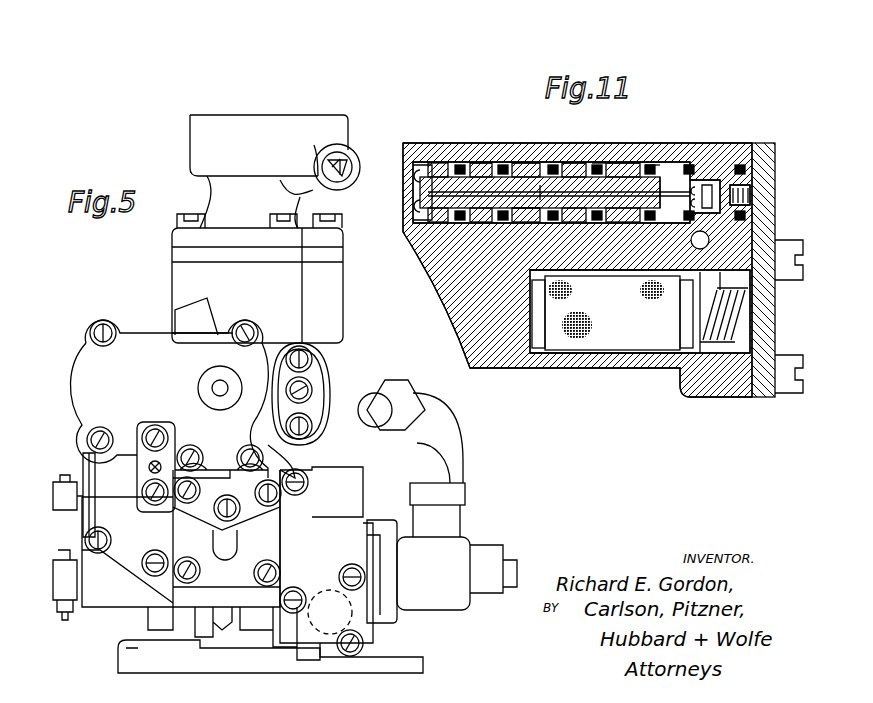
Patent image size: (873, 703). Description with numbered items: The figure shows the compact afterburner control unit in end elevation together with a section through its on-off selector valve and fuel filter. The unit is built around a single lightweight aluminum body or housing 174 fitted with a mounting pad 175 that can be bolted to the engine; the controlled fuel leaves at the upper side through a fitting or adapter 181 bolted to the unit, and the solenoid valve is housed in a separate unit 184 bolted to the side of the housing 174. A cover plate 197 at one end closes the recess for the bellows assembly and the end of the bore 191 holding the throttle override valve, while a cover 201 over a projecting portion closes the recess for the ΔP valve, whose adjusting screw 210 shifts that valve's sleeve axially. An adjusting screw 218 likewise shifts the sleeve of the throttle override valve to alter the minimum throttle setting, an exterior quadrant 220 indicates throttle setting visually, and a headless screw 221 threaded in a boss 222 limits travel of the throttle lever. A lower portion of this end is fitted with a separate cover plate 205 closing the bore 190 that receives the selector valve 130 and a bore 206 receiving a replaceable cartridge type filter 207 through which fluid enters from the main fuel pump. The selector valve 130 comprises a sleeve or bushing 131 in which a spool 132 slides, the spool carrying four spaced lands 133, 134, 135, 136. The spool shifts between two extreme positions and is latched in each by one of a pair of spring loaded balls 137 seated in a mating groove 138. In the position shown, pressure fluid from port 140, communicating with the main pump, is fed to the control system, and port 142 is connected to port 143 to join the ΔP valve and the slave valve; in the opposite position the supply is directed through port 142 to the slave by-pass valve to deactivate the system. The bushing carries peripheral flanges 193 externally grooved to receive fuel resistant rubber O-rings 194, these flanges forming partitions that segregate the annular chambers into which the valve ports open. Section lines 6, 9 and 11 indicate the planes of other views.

In FIG. 5, the fitting or adapter 181 is at (203, 143).
In FIG. 5, the cover plate 197 is at (130, 338).
In FIG. 5, the section line 6- 6 is at (368, 366).
In FIG. 5, the body or housing 174 is at (310, 455).
In FIG. 11, the body or housing 174 is at (718, 387).
In FIG. 5, the adjusting screw 218 is at (150, 466).
In FIG. 5, the exterior quadrant 220 is at (90, 458).
In FIG. 5, the section line 9- 9 is at (130, 493).
In FIG. 5, the cover 201 is at (178, 528).
In FIG. 5, the adjusting screw 210 is at (237, 512).
In FIG. 5, the boss 222 is at (62, 581).
In FIG. 5, the headless screw 221 is at (68, 615).
In FIG. 5, the mounting pad 175 is at (410, 662).
In FIG. 5, the cover plate 205 is at (357, 517).
In FIG. 11, the cover plate 205 is at (768, 193).
In FIG. 5, the section line 11- 11 is at (415, 643).
In FIG. 5, the separate unit 184 is at (450, 595).
In FIG. 11, the land 133 is at (417, 237).
In FIG. 11, the selector valve 130 is at (495, 160).
In FIG. 11, the spring loaded balls 137 is at (420, 173).
In FIG. 11, the groove 138 is at (413, 205).
In FIG. 11, the bore 190 is at (480, 168).
In FIG. 11, the land 134 is at (513, 172).
In FIG. 11, the bore 191 is at (533, 172).
In FIG. 11, the spool 132 is at (555, 190).
In FIG. 11, the port 140 is at (575, 160).
In FIG. 11, the land 135 is at (600, 172).
In FIG. 11, the port 142 is at (618, 170).
In FIG. 11, the port 143 is at (657, 177).
In FIG. 11, the land 136 is at (670, 173).
In FIG. 11, the O-rings 194 is at (687, 153).
In FIG. 11, the sleeve or bushing 131 is at (702, 157).
In FIG. 11, the peripheral flanges 193 is at (706, 240).
In FIG. 11, the bore 206 is at (608, 353).
In FIG. 11, the cartridge type filter 207 is at (570, 342).